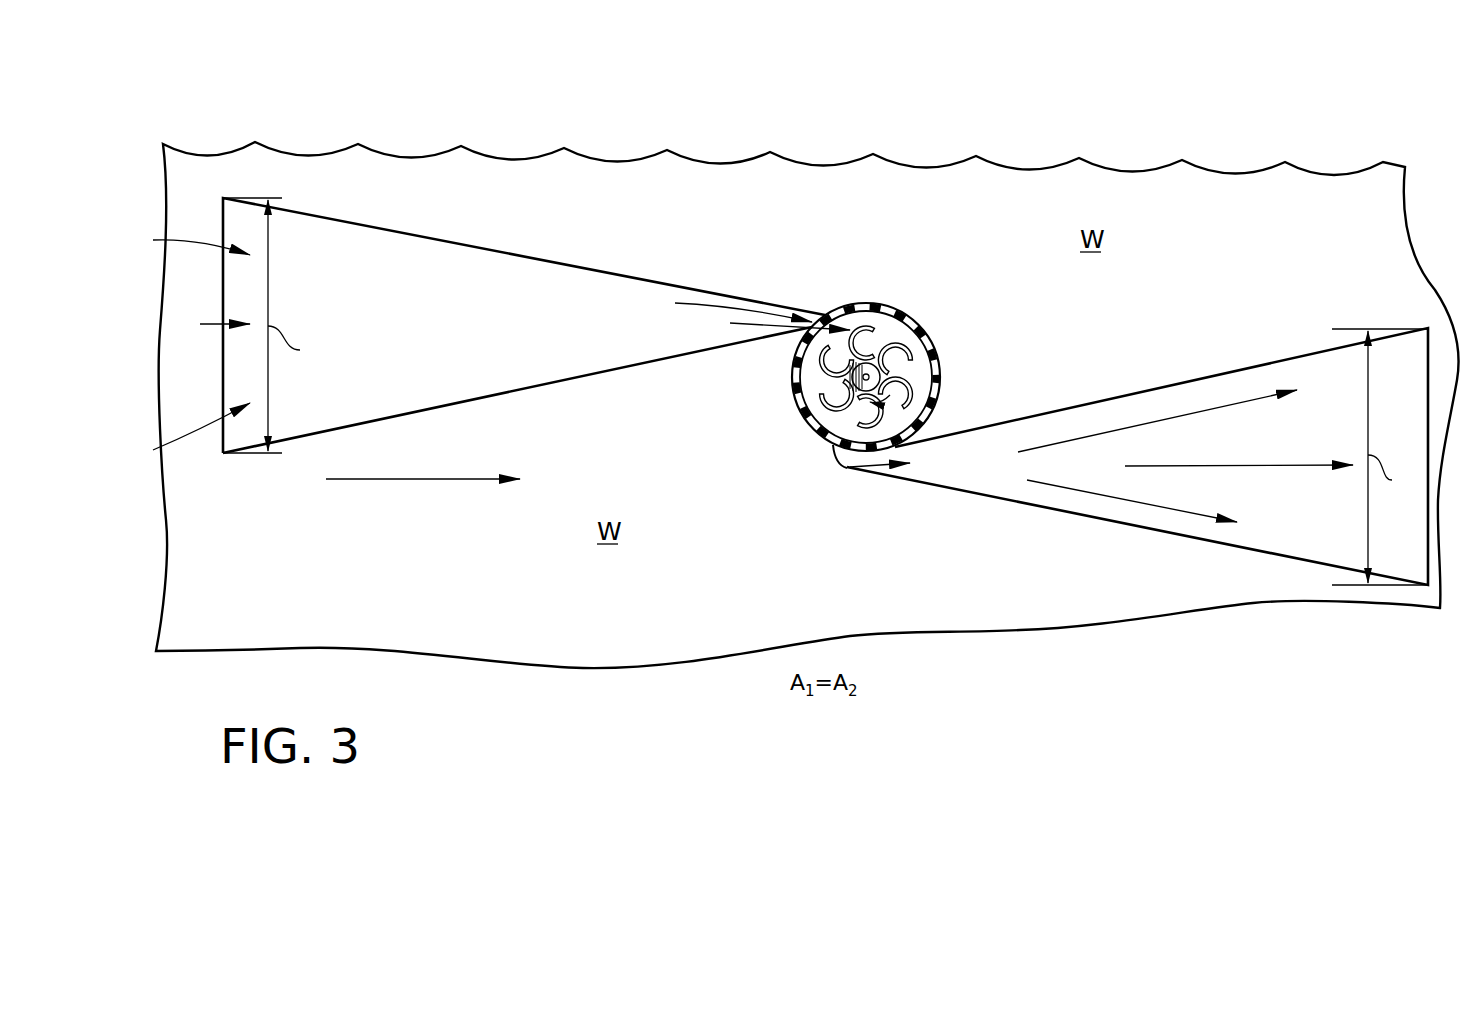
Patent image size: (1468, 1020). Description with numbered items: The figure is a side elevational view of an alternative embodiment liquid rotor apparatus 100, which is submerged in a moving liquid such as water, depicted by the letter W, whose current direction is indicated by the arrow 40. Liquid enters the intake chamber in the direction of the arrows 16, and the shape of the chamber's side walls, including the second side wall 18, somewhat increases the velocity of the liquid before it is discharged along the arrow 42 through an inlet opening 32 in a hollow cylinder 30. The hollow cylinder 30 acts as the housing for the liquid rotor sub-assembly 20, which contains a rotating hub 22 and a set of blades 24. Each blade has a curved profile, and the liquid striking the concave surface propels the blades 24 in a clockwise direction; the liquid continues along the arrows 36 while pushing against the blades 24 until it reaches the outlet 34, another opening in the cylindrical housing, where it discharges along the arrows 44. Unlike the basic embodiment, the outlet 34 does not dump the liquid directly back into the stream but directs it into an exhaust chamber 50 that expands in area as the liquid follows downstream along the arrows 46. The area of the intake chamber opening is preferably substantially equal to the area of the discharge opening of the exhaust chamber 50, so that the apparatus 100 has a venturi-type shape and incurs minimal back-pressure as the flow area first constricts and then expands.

The liquid rotor apparatus 100 is at (740, 205).
The arrows 16 is at (172, 240).
The second side wall 18 is at (472, 358).
The sub-assembly 20 is at (800, 432).
The rotating hub 22 is at (797, 402).
The blades 24 is at (897, 360).
The hollow cylinder 30 is at (792, 382).
The inlet opening 32 is at (727, 306).
The outlet 34 is at (840, 462).
The arrows 36 is at (903, 397).
The arrow 40 is at (420, 479).
The arrow 42 is at (750, 324).
The arrows 44 is at (885, 440).
The arrows 46 is at (1293, 464).
The exhaust chamber 50 is at (1233, 368).